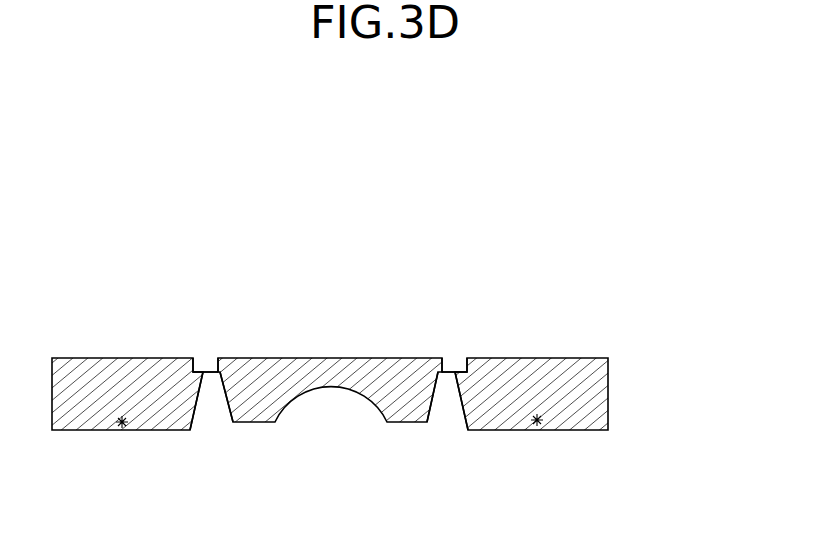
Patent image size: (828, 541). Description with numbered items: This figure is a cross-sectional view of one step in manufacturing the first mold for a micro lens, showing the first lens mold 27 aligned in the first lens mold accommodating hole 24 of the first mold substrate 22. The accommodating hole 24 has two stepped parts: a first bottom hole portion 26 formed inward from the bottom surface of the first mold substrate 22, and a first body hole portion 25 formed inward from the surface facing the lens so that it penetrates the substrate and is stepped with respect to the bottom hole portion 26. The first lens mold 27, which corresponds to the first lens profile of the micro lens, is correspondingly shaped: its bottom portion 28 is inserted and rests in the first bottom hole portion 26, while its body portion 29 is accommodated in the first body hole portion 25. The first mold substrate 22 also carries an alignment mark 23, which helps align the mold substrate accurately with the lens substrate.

The first mold substrate 22 is at (590, 393).
The alignment mark 23 is at (122, 422).
The first lens mold accommodating hole 24 is at (510, 246).
The first body hole portion 25 is at (465, 408).
The first bottom hole portion 26 is at (463, 368).
The first lens mold 27 is at (180, 241).
The bottom portion 28 is at (210, 370).
The body portion 29 is at (293, 376).